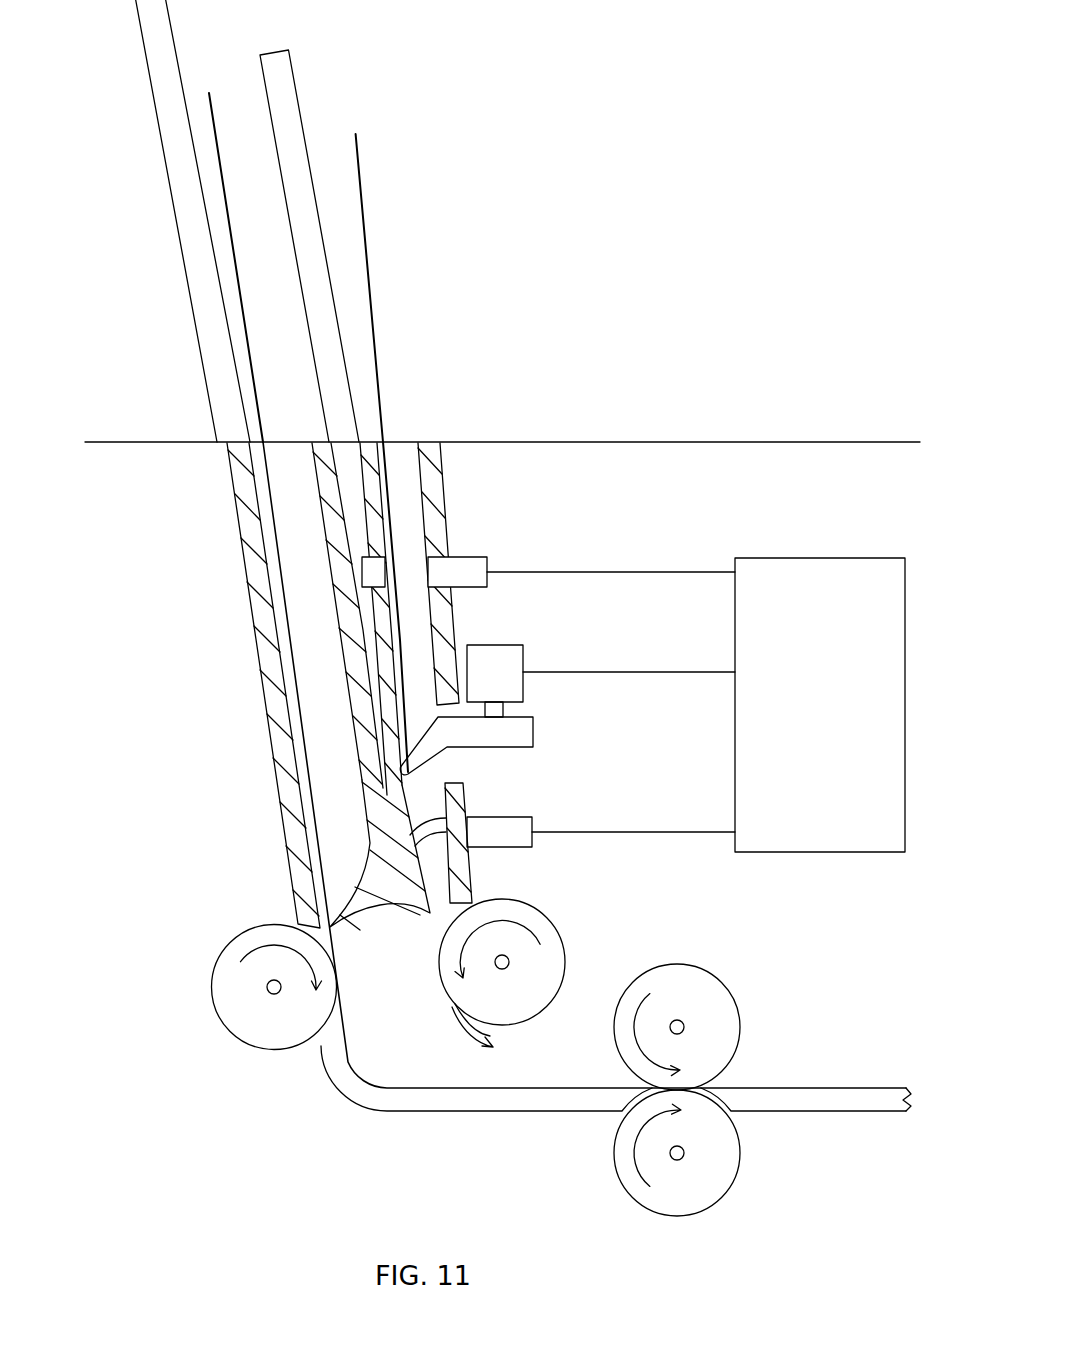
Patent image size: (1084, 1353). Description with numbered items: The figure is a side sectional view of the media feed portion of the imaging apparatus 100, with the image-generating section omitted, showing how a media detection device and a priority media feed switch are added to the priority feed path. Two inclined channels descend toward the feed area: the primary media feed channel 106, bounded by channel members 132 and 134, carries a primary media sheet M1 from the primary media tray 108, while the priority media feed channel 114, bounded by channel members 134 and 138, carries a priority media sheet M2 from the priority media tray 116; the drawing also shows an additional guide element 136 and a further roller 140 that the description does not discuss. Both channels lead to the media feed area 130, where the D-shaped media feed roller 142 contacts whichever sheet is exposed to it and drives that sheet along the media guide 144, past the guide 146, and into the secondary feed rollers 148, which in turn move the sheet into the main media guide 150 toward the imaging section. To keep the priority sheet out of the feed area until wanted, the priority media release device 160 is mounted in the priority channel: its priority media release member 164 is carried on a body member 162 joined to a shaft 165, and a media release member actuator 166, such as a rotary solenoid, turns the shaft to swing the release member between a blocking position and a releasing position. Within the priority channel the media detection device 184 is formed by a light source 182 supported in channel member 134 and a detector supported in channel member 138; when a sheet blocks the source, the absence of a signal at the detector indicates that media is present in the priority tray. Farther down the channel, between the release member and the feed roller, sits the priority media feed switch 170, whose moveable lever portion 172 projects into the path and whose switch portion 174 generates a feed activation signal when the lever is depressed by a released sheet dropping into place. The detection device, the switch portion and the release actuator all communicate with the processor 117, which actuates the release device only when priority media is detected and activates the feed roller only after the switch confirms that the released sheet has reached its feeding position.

The imaging apparatus 100 is at (675, 287).
The primary media feed channel 106 is at (297, 538).
The primary media tray 108 is at (165, 97).
The priority media feed channel 114 is at (399, 443).
The priority media tray 116 is at (297, 80).
The processor 117 is at (817, 567).
The media feed area 130 is at (258, 1102).
The channel member 132 is at (293, 842).
The channel member 134 is at (352, 630).
The guide wall 136 is at (373, 508).
The priority media channel member 138 is at (435, 535).
The feed roller 140 is at (223, 987).
The media feed roller 142 is at (548, 943).
The media guide 144 is at (375, 1090).
The guide 146 is at (493, 1047).
The secondary feed rollers 148 is at (725, 1025).
The main media guide 150 is at (882, 1107).
The priority media release device 160 is at (567, 708).
The body member 162 is at (533, 737).
The priority media release member 164 is at (412, 770).
The shaft 165 is at (505, 712).
The media release member actuator 166 is at (517, 655).
The priority media feed switch 170 is at (601, 833).
The moveable lever portion 172 is at (427, 826).
The switch portion 174 is at (522, 823).
The source 182 is at (373, 572).
The media detection device 184 is at (478, 565).
The primary media sheet M1 is at (209, 96).
The priority media sheet M2 is at (362, 214).